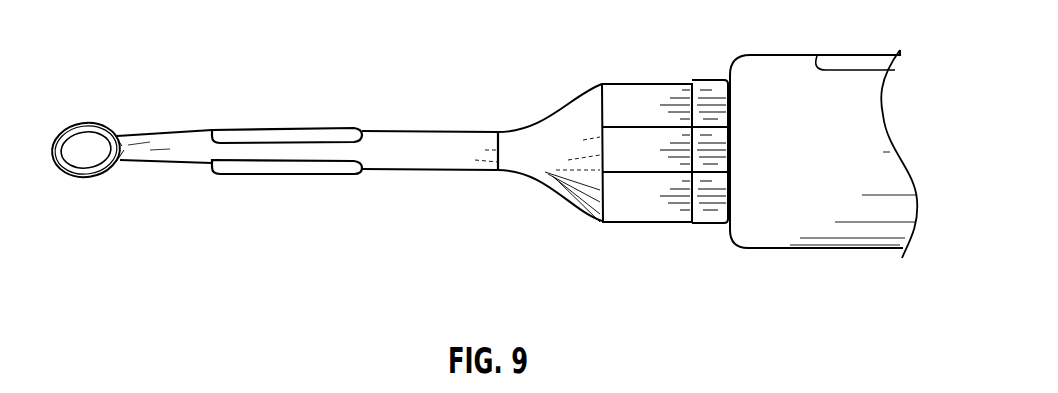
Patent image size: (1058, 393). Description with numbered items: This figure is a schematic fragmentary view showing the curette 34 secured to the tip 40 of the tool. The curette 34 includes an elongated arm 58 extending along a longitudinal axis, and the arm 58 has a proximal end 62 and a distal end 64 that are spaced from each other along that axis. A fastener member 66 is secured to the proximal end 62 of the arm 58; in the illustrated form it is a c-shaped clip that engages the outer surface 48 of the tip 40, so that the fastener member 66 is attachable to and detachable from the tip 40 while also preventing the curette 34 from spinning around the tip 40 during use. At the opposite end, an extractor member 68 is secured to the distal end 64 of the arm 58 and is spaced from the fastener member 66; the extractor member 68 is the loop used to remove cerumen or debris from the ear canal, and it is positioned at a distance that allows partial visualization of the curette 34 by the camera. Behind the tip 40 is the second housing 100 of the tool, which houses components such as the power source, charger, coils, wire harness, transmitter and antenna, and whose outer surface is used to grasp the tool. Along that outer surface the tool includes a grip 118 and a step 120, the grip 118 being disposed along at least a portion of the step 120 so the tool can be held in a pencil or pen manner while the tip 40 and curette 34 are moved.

The curette 34 is at (84, 146).
The extractor member 68 is at (68, 127).
The distal end 64 is at (137, 160).
The arm 58 is at (173, 137).
The fastener member 66 is at (302, 114).
The proximal end 62 is at (358, 128).
The tip 40 is at (482, 143).
The outer surface 48 is at (438, 140).
The grip 118 is at (667, 198).
The step 120 is at (706, 235).
The second housing 100 is at (782, 63).